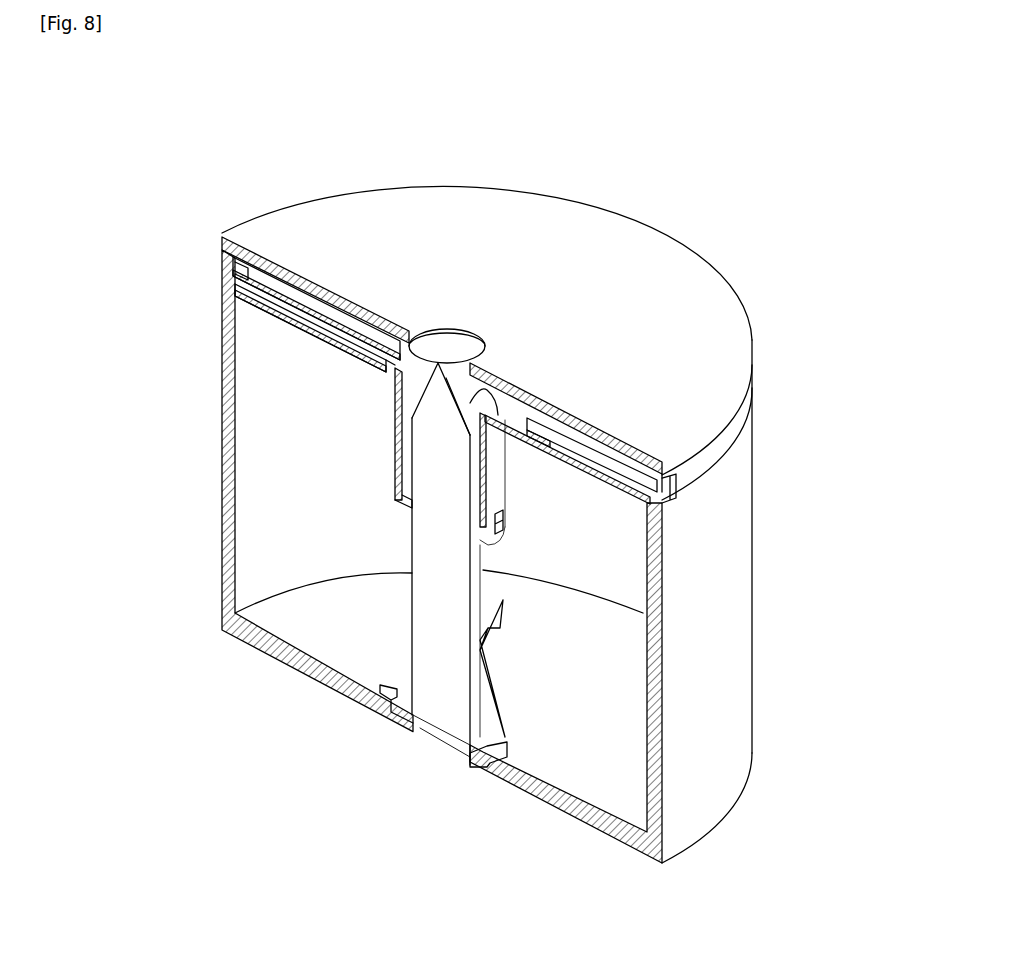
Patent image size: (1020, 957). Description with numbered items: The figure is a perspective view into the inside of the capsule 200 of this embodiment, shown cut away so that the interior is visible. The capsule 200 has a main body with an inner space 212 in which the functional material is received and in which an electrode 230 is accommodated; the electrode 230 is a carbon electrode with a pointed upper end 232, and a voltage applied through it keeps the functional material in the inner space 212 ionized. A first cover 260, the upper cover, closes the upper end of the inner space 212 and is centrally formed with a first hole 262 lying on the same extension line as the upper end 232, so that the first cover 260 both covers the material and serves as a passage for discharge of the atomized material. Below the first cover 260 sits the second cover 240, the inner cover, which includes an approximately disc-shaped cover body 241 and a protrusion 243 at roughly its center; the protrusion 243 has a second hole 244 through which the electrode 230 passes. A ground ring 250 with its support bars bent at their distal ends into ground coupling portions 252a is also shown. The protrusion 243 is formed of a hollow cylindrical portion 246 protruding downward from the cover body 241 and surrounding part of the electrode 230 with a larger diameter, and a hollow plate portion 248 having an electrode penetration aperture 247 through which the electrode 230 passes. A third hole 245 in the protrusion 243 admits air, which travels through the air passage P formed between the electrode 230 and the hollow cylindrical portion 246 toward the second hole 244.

The capsule 200 is at (664, 205).
The inner space 212 is at (323, 637).
The electrode 230 is at (316, 429).
The pointed upper end 232 is at (428, 372).
The second cover 240 is at (390, 302).
The cover body 241 is at (388, 348).
The protrusion 243 is at (236, 545).
The second hole 244 is at (413, 383).
The third hole 245 is at (505, 520).
The hollow cylindrical portion 246 is at (402, 500).
The electrode penetration aperture 247 is at (470, 745).
The hollow plate portion 248 is at (410, 504).
The ground ring 250 is at (333, 297).
The ground coupling portions 252a is at (677, 490).
The first cover 260 is at (722, 348).
The first hole 262 is at (458, 342).
The air passage P is at (488, 484).